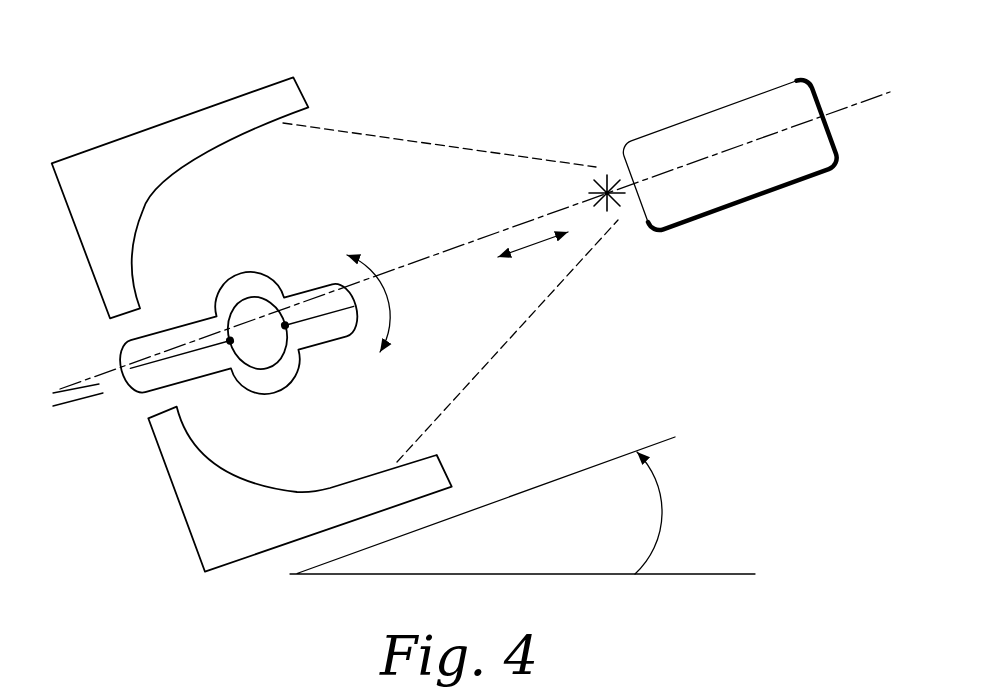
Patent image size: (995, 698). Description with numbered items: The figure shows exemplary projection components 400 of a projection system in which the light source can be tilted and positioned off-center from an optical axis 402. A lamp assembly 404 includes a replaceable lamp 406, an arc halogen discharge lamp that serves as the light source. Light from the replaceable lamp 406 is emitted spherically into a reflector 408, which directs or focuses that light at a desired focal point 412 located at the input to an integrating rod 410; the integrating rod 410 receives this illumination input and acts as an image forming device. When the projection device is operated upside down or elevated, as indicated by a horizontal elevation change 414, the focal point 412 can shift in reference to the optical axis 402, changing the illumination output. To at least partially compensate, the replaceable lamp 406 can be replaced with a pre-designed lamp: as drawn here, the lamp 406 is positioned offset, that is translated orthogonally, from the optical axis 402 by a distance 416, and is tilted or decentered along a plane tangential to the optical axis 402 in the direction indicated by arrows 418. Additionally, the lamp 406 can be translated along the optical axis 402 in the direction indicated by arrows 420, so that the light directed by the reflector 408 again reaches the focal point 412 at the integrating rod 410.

The projection components 400 is at (617, 83).
The optical axis 402 is at (511, 229).
The lamp assembly 404 is at (258, 241).
The replaceable lamp 406 is at (285, 390).
The reflector 408 is at (143, 130).
The integrating rod 410 is at (730, 155).
The focal point 412 is at (606, 164).
The horizontal elevation change 414 is at (662, 508).
The distance 416 is at (55, 337).
The arrows 418 is at (388, 312).
The arrows 420 is at (537, 245).